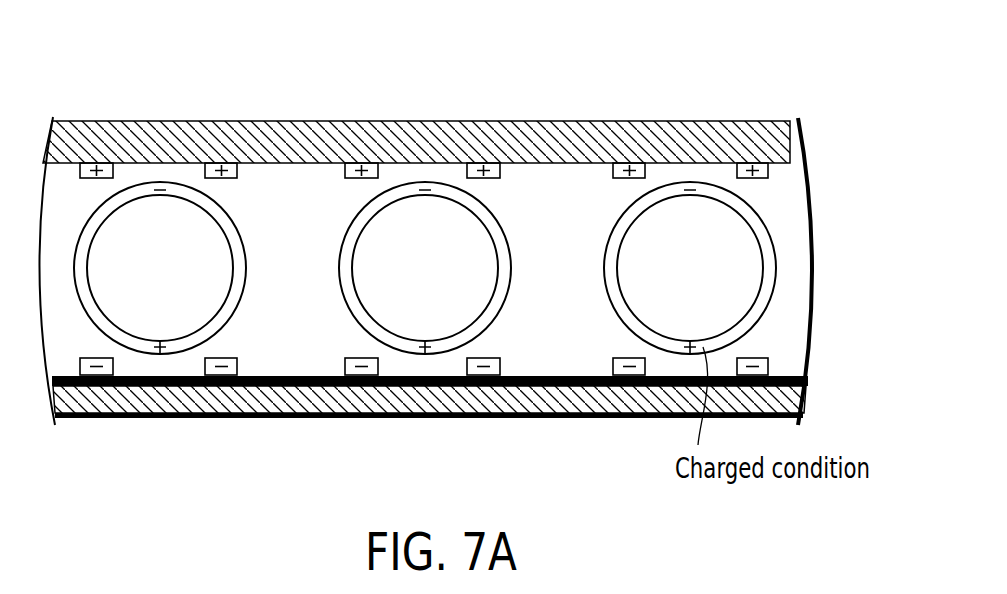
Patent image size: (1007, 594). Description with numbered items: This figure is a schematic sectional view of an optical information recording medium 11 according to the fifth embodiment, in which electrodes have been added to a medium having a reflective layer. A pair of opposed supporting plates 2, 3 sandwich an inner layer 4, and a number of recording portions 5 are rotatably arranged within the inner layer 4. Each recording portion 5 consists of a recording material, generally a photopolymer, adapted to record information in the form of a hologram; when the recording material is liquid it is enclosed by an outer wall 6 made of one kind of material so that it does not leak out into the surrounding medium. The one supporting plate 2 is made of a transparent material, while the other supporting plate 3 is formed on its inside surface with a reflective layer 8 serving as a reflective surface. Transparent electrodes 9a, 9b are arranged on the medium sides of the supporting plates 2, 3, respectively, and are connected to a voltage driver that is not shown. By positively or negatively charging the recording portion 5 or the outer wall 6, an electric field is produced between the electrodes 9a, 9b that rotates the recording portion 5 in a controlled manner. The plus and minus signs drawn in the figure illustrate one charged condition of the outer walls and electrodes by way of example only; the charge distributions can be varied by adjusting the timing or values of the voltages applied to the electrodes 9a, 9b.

The optical information recording medium 11 is at (680, 108).
The supporting plate 2 is at (762, 123).
The supporting plate 3 is at (133, 395).
The inner layer 4 is at (563, 323).
The recording portion 5 is at (425, 282).
The outer wall 6 is at (395, 342).
The reflective layer 8 is at (643, 387).
The transparent electrode 9a is at (233, 167).
The transparent electrode 9b is at (223, 385).